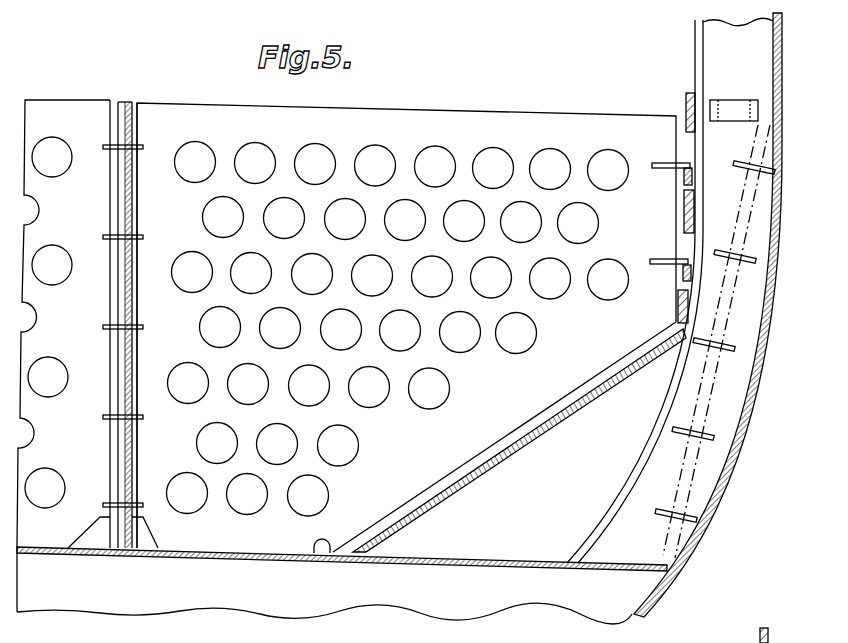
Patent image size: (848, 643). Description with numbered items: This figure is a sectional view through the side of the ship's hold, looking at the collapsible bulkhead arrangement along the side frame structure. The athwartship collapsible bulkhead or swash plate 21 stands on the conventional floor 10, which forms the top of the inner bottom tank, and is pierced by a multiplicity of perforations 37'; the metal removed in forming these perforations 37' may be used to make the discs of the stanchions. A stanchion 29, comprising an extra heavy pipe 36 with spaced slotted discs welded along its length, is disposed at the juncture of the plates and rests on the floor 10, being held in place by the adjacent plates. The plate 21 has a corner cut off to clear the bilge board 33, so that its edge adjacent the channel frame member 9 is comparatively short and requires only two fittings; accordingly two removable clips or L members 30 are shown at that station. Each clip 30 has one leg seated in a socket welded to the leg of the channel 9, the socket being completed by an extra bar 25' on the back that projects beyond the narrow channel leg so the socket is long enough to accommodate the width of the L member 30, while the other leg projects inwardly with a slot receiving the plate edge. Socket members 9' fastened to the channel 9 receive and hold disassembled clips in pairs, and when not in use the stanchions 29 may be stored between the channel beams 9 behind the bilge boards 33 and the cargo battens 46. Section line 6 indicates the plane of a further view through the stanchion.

The section line 6- 6 is at (41, 28).
The channel frame member 9 is at (339, 556).
The socket member 9' is at (734, 122).
The floor 10 is at (206, 556).
The collapsible bulkhead or swash plate 21 is at (455, 116).
The extra bar 25' is at (666, 231).
The stanchion 29 is at (124, 98).
The removable clip or L member 30 is at (663, 163).
The bilge board 33 is at (590, 397).
The pipe 36 is at (131, 104).
The perforation 37' is at (398, 321).
The cargo batten 46 is at (687, 100).